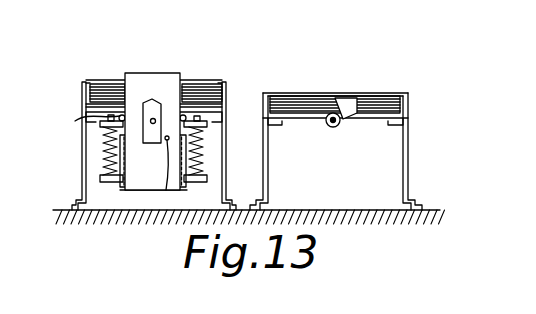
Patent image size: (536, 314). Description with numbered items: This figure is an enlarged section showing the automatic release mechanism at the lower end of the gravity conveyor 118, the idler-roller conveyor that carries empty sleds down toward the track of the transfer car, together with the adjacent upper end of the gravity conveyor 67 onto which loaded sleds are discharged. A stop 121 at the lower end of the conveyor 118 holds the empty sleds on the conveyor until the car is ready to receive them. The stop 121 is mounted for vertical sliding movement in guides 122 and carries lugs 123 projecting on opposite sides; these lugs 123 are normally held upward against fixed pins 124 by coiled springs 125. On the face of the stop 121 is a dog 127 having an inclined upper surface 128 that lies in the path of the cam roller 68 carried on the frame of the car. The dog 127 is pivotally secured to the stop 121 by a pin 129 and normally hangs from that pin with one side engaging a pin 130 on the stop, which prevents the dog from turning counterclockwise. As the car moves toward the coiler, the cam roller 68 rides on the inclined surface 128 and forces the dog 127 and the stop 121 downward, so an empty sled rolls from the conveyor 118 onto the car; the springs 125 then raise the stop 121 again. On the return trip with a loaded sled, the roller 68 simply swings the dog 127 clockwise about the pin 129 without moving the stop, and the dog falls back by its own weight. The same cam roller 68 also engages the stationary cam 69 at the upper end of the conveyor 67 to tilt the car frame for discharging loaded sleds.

The gravity conveyor 118 is at (105, 80).
The stop 121 is at (147, 78).
The guides 122 is at (112, 188).
The lugs 123 is at (102, 125).
The fixed pins 124 is at (75, 121).
The coiled springs 125 is at (102, 153).
The dog 127 is at (152, 144).
The inclined upper surface 128 is at (155, 119).
The pin 129 is at (192, 83).
The pin 130 is at (166, 190).
The gravity conveyor 67 is at (363, 93).
The cam roller 68 is at (335, 126).
The stationary cam 69 is at (352, 116).